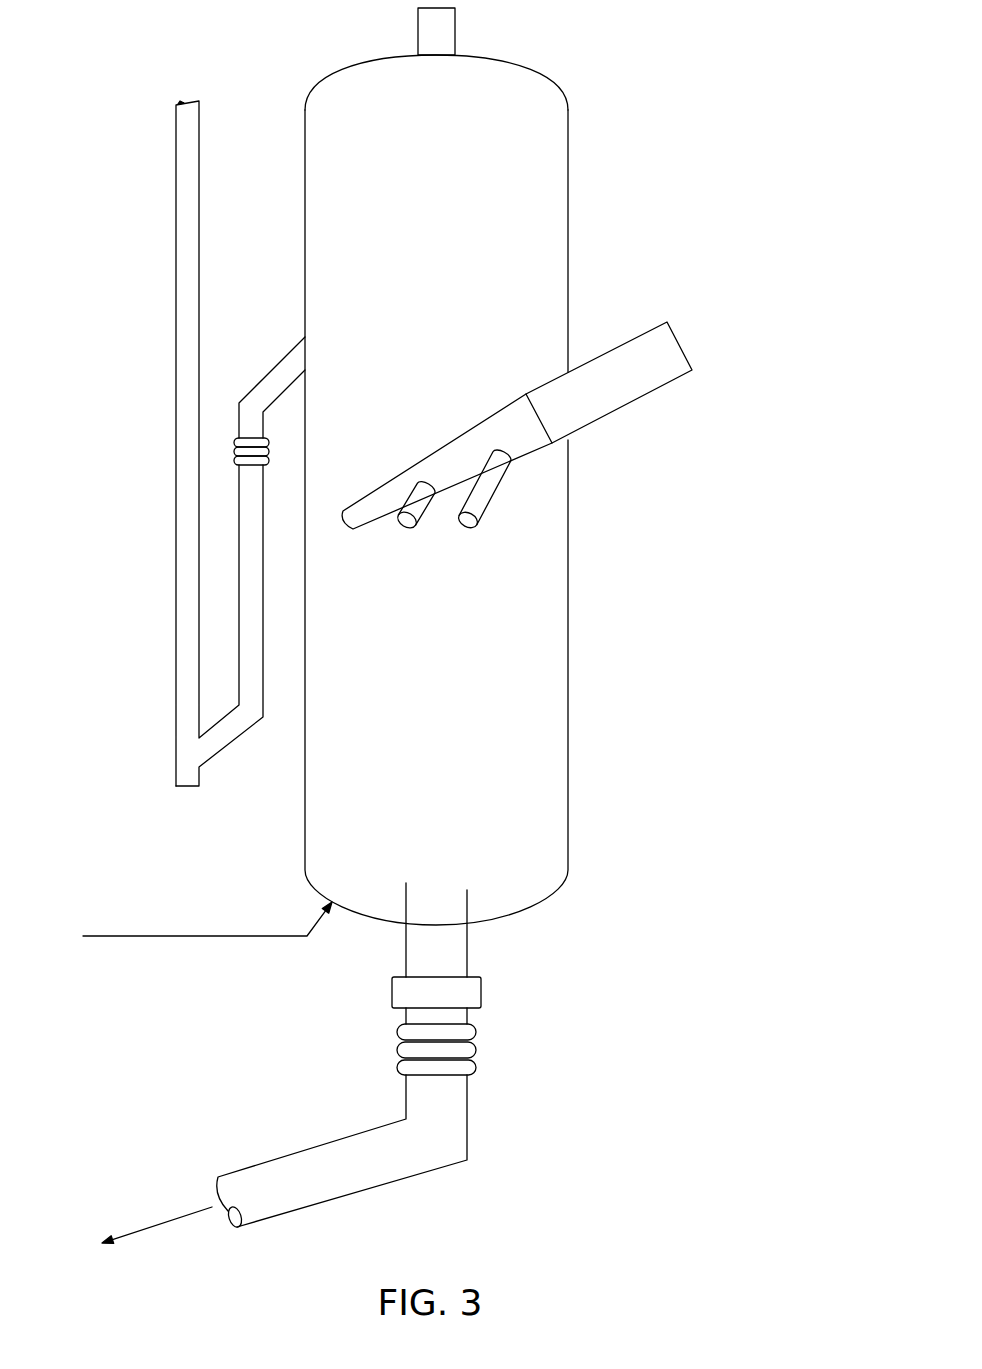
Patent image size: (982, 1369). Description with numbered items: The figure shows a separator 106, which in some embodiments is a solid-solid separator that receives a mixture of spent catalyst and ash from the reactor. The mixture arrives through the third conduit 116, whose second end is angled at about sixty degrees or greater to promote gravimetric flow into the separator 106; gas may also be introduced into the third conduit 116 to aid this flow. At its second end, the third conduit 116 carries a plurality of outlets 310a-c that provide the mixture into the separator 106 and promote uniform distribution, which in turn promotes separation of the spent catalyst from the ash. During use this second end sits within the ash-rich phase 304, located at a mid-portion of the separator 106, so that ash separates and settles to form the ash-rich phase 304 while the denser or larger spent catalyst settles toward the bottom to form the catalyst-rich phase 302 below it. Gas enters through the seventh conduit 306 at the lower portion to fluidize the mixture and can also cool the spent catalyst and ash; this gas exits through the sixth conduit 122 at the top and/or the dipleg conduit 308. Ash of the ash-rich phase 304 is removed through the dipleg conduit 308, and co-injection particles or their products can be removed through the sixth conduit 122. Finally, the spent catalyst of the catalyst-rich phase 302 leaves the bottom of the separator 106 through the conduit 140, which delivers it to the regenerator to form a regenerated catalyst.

The separator 106 is at (622, 26).
The sixth conduit 122 is at (467, 29).
The catalyst-rich phase 302 is at (455, 776).
The ash-rich phase 304 is at (431, 444).
The seventh conduit 306 is at (190, 950).
The dipleg conduit 308 is at (155, 413).
The outlets 310a-c is at (364, 541).
The third conduit 116 is at (647, 410).
The conduit 140 is at (346, 1212).